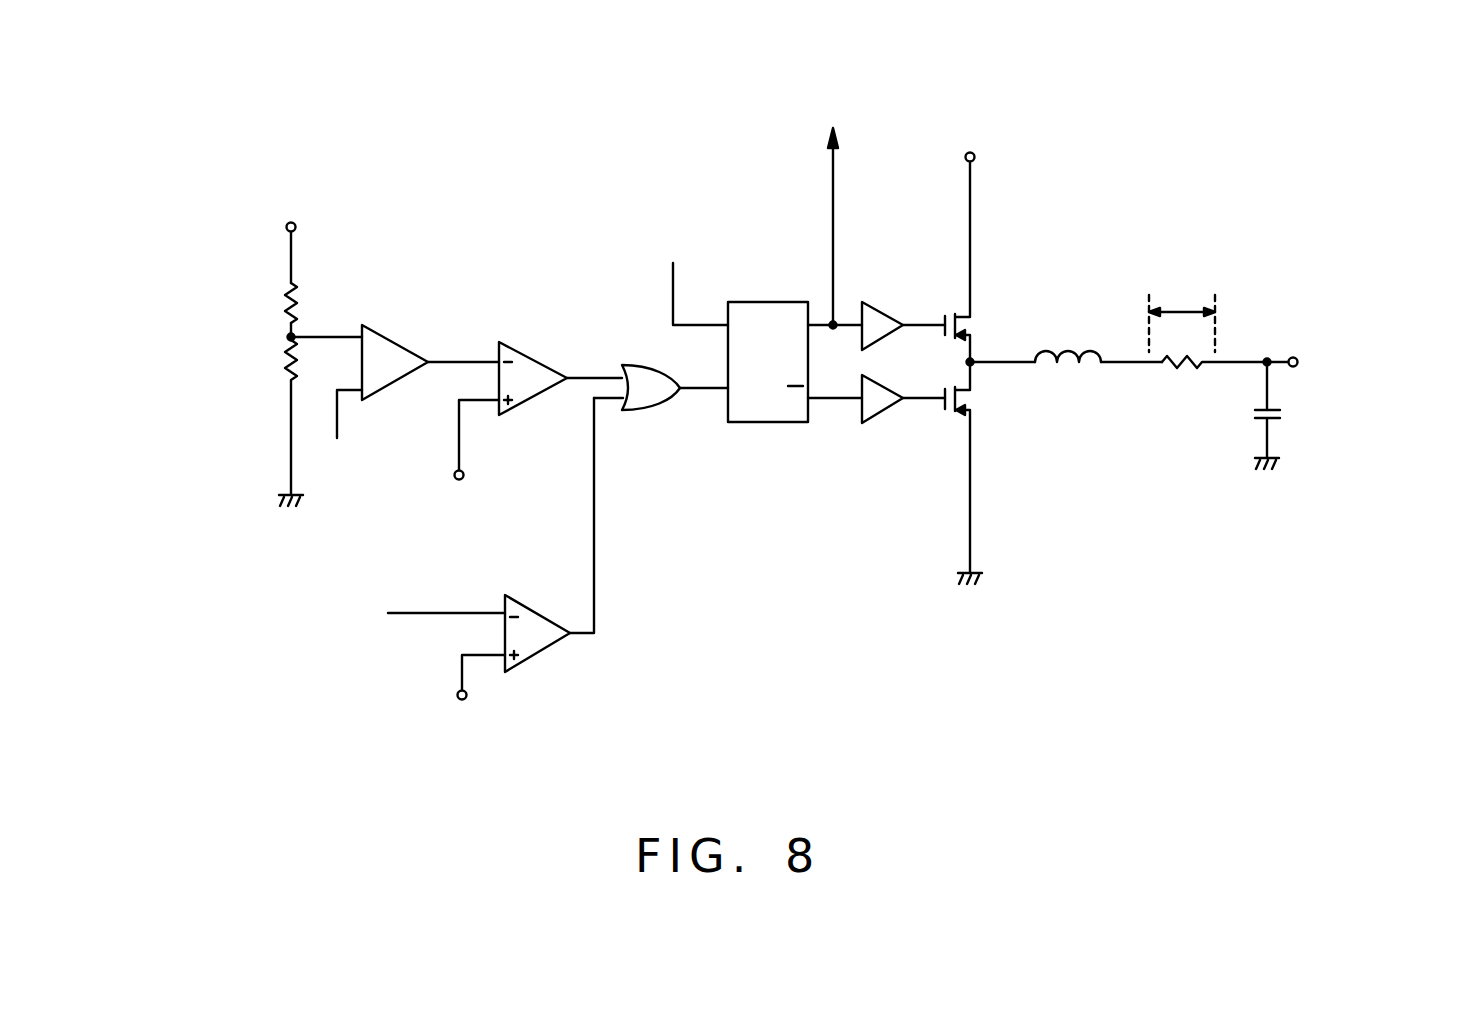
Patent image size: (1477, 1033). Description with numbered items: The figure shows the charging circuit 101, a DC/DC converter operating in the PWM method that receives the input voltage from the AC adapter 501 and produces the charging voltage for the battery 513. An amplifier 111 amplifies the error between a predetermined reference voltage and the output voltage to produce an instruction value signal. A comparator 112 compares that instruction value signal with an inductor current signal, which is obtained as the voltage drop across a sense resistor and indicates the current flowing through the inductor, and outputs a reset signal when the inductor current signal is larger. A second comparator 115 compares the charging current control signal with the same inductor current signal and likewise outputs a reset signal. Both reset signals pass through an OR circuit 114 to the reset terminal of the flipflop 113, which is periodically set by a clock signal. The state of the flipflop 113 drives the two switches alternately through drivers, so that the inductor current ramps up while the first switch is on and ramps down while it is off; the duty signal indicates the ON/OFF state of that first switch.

The charging circuit 101 is at (556, 122).
The amplifier 111 is at (386, 338).
The comparator 112 is at (531, 346).
The flipflop 113 is at (746, 423).
The OR circuit 114 is at (641, 411).
The comparator 115 is at (552, 648).
The AC adapter 501 is at (1036, 131).
The battery 513 is at (1376, 363).